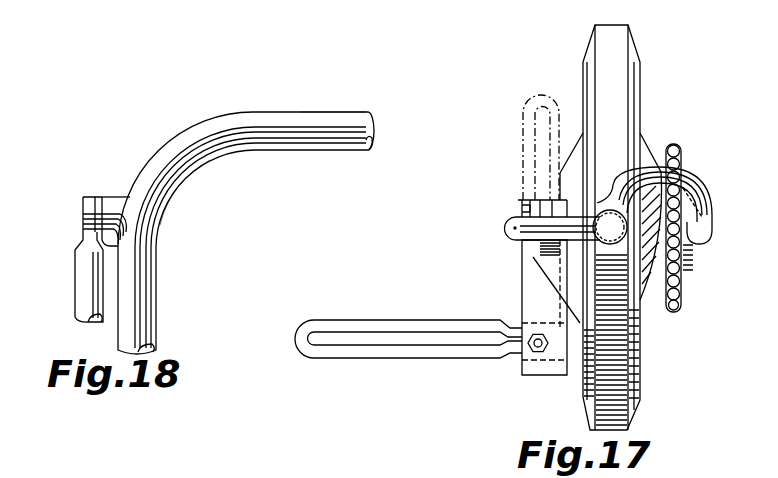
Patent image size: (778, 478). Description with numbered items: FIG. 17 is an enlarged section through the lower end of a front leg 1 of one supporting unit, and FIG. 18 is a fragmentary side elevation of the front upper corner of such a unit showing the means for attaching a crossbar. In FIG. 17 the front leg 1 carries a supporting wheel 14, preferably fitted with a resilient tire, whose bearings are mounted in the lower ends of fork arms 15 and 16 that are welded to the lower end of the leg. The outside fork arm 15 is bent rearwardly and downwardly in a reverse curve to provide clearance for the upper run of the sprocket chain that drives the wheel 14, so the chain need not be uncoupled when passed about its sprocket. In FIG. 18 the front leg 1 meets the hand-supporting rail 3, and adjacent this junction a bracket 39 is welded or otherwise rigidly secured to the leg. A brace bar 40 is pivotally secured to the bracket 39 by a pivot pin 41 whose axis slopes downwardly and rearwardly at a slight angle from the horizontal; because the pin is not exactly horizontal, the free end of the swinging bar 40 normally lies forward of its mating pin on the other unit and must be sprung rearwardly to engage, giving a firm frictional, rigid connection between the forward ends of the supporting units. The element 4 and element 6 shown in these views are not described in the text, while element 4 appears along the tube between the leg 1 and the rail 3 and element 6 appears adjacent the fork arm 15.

In FIG. 18, the front leg 1 is at (152, 326).
In FIG. 17, the front leg 1 is at (596, 174).
In FIG. 18, the hand-supporting rail 3 is at (333, 121).
In FIG. 18, the bend 4 is at (193, 130).
In FIG. 18, the bracket 39 is at (113, 196).
In FIG. 18, the brace bar 40 is at (82, 283).
In FIG. 18, the pivot pin 41 is at (81, 207).
In FIG. 17, the supporting wheel 14 is at (622, 52).
In FIG. 17, the fork arm 15 is at (703, 193).
In FIG. 17, the fork arm 16 is at (555, 224).
In FIG. 17, the bead chain 6 is at (682, 296).